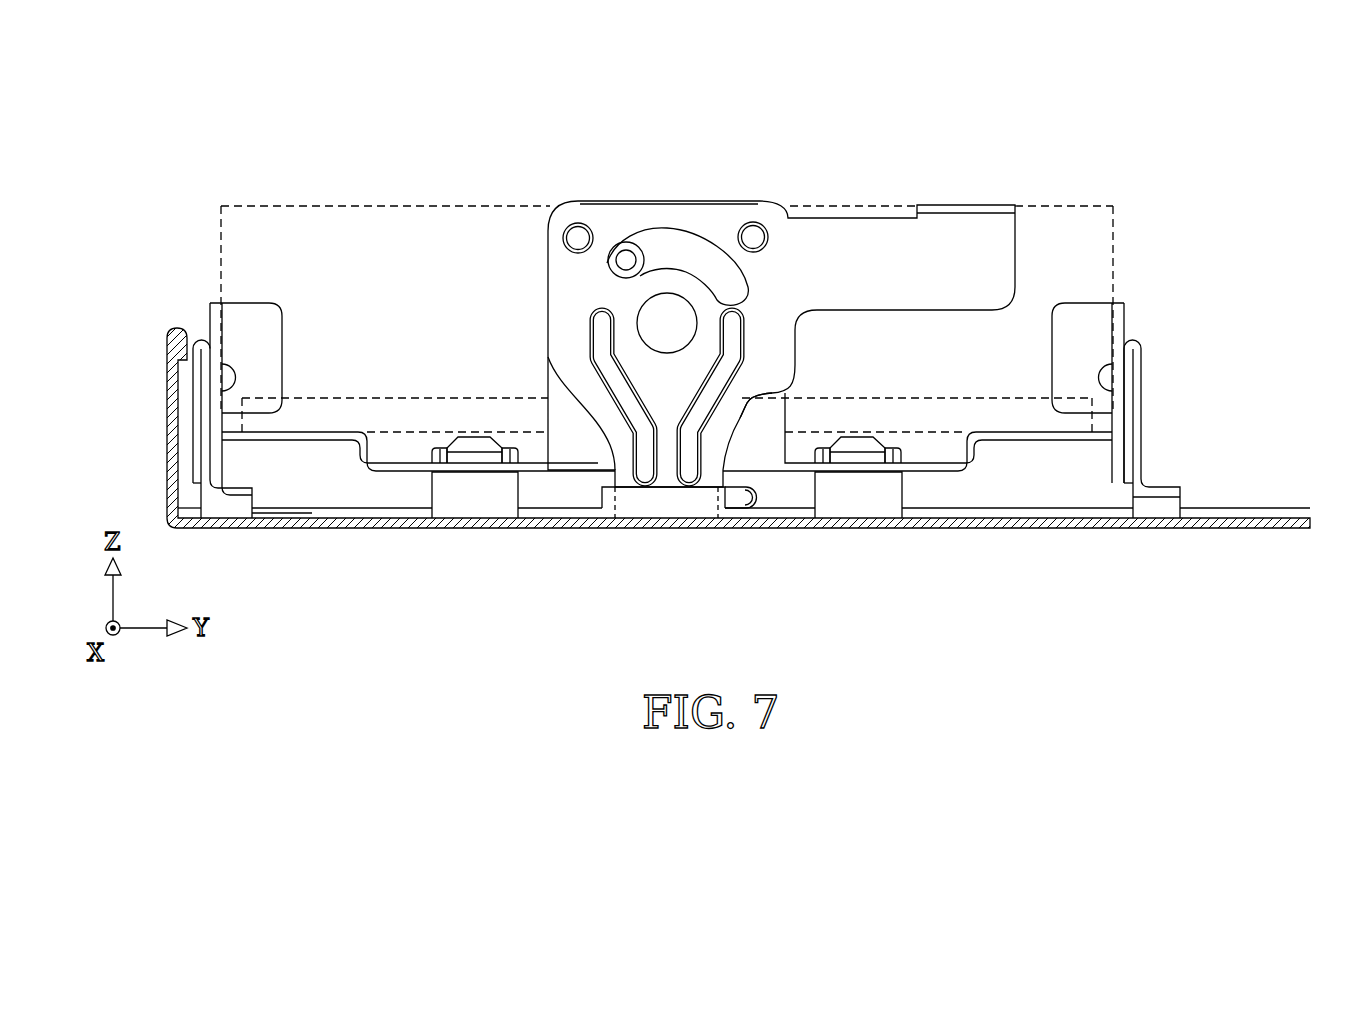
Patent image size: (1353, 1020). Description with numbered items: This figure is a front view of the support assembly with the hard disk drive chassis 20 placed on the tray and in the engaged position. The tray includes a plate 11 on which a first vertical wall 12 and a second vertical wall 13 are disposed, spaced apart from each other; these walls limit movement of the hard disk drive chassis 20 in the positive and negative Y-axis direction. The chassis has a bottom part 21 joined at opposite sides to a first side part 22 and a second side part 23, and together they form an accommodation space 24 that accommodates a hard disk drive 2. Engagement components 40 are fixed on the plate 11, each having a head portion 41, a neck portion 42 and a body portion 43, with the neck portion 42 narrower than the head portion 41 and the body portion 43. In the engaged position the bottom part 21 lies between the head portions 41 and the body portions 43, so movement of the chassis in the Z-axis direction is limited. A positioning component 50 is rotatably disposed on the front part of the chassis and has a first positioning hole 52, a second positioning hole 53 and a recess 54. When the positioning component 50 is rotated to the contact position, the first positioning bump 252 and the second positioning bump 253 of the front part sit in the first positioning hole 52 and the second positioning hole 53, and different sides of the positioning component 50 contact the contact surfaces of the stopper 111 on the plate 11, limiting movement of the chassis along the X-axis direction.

The hard disk drive 2 is at (373, 202).
The plate 11 is at (352, 528).
The stopper 111 is at (672, 498).
The first vertical wall 12 is at (193, 438).
The second vertical wall 13 is at (1137, 437).
The hard disk drive chassis 20 is at (348, 449).
The bottom part 21 is at (803, 468).
The first side part 22 is at (213, 323).
The second side part 23 is at (1118, 322).
The accommodation space 24 is at (395, 441).
The engagement component 40 is at (699, 536).
The head portion 41 is at (478, 445).
The neck portion 42 is at (497, 464).
The body portion 43 is at (475, 500).
The positioning component 50 is at (950, 247).
The first positioning hole 52 is at (589, 227).
The second positioning hole 53 is at (741, 228).
The recess 54 is at (750, 406).
The first positioning bump 252 is at (565, 238).
The second positioning bump 253 is at (752, 237).